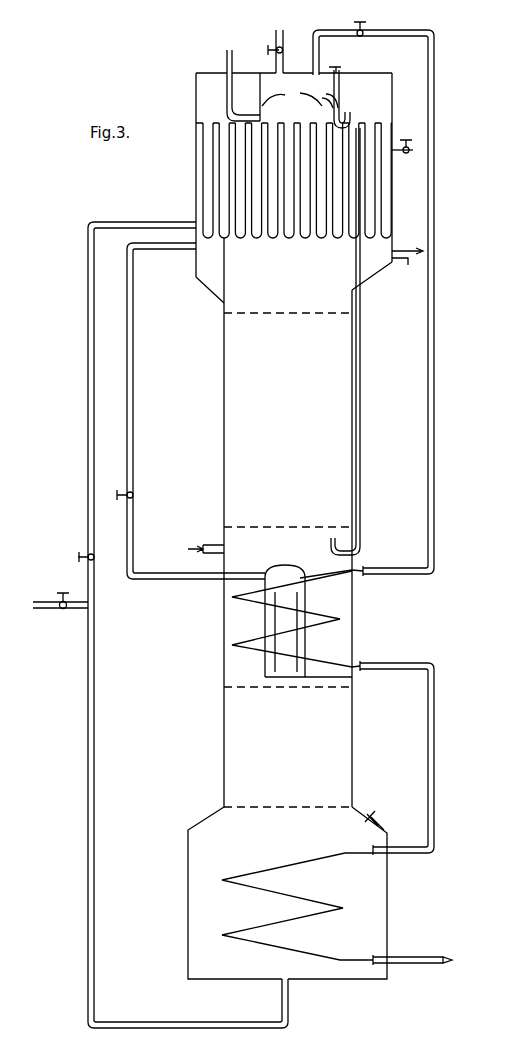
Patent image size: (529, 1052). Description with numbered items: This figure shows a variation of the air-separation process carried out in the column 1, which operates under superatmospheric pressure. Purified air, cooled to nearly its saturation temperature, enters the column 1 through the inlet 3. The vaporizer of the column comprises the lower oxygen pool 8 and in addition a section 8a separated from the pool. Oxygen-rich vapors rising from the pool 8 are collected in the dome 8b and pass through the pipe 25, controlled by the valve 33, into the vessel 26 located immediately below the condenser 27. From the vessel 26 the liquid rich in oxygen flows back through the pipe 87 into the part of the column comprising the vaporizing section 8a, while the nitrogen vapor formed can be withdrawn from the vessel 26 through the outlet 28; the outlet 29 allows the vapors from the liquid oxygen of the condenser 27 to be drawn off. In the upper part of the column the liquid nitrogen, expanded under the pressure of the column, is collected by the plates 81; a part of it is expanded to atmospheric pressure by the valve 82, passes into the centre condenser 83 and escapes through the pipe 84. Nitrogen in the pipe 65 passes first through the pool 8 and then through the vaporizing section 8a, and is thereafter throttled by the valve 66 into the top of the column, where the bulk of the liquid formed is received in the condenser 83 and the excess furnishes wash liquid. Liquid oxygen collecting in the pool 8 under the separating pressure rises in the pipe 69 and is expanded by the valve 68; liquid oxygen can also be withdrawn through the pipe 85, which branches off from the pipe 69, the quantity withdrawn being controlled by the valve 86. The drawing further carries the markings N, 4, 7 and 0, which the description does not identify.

The column 1 is at (294, 522).
The inlet 3 is at (208, 543).
The nitrogen supply pipe 4 is at (282, 44).
The nitrogen N is at (344, 135).
The valve stub 7 is at (402, 160).
The valve 0 is at (419, 151).
The oxygen pool 8 is at (287, 893).
The vaporizing section 8a is at (318, 648).
The dome 8b is at (283, 572).
The pipe 25 is at (134, 470).
The vessel 26 is at (212, 288).
The condenser 27 is at (200, 197).
The outlet 28 is at (403, 263).
The outlet 29 is at (413, 146).
The valve 33 is at (134, 495).
The pipe 65 is at (435, 33).
The valve 66 is at (373, 24).
The valve 68 is at (86, 555).
The pipe 69 is at (88, 430).
The plates 81 is at (292, 94).
The valve 82 is at (340, 108).
The centre condenser 83 is at (346, 130).
The pipe 84 is at (232, 50).
The pipe 85 is at (44, 609).
The valve 86 is at (62, 596).
The pipe 87 is at (361, 462).